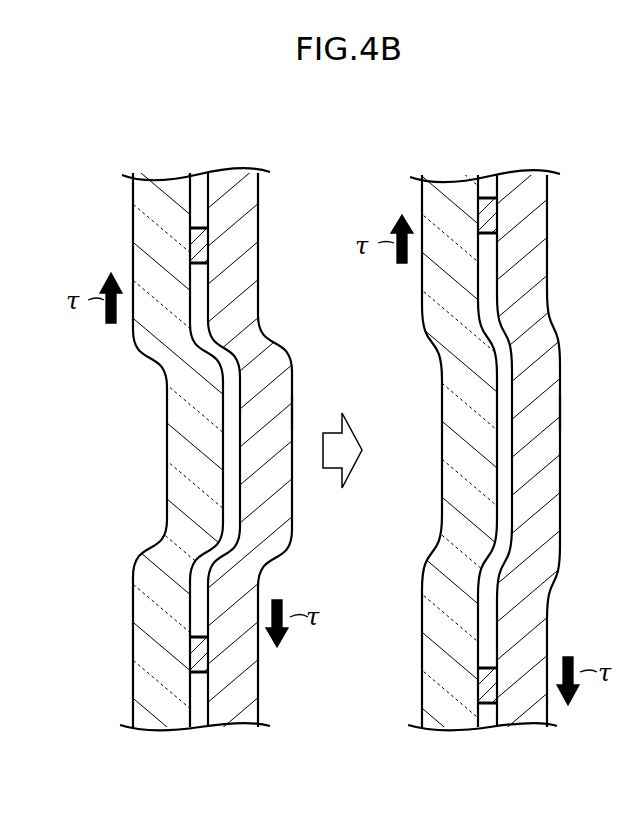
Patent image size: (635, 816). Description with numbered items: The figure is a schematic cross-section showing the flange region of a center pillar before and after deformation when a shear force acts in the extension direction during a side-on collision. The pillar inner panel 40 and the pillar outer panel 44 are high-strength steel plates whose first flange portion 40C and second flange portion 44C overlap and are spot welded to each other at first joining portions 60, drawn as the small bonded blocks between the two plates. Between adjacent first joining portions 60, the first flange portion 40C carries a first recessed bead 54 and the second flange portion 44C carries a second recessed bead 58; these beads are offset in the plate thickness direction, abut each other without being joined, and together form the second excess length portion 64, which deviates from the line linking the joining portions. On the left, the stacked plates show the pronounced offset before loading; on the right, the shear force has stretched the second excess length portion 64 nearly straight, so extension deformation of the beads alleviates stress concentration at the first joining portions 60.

The pillar inner panel 40 is at (133, 680).
The first flange portion 40C is at (150, 637).
The pillar outer panel 44 is at (258, 254).
The second flange portion 44C is at (243, 224).
The first recessed bead 54 is at (167, 431).
The second recessed bead 58 is at (292, 470).
The first joining portion 60 is at (198, 240).
The second excess length portion 64 is at (295, 411).